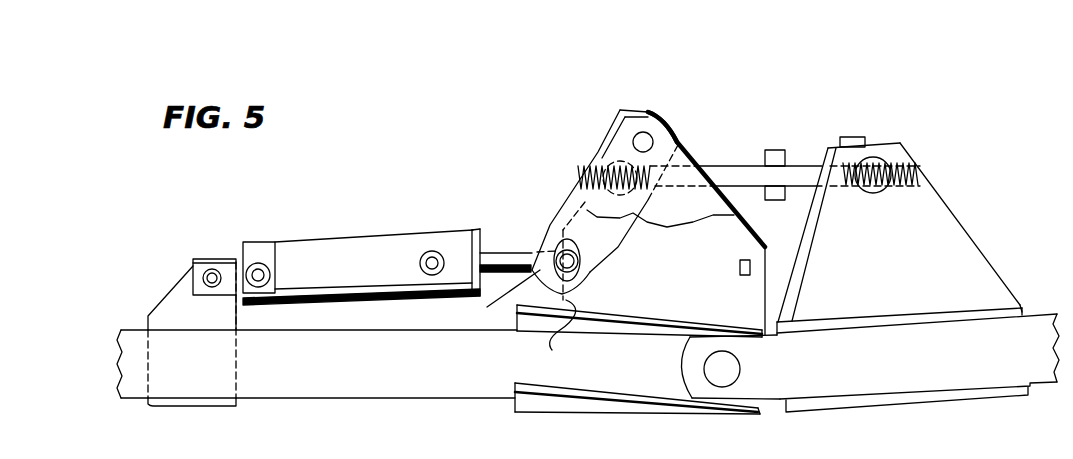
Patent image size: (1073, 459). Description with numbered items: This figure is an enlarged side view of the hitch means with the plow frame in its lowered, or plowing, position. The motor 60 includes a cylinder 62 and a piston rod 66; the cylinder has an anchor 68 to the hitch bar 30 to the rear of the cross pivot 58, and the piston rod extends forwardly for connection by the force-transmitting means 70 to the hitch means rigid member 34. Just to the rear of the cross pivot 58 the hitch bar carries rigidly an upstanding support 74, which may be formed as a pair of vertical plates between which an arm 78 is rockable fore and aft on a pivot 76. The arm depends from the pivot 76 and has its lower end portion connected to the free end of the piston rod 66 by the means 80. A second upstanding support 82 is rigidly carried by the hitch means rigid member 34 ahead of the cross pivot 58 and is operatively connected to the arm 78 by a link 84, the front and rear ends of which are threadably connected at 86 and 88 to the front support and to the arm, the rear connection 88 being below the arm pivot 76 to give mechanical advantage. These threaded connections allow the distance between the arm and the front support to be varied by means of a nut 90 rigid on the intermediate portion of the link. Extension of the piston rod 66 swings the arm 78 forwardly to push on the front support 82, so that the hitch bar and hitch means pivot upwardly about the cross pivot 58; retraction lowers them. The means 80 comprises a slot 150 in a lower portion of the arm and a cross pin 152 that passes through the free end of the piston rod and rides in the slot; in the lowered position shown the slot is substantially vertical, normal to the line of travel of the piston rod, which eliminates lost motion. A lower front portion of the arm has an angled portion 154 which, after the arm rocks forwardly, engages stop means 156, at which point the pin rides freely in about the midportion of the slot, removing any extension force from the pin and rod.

The hitch bar 30 is at (418, 376).
The hitch means rigid member 34 is at (984, 365).
The cross pivot 58 is at (741, 364).
The motor 60 is at (399, 238).
The cylinder 62 is at (305, 252).
The piston rod 66 is at (517, 258).
The anchor 68 is at (208, 270).
The force-transmitting means 70 is at (648, 212).
The upstanding support 74 is at (628, 132).
The pivot 76 is at (645, 140).
The arm 78 is at (615, 246).
The means 80 is at (592, 267).
The second upstanding support 82 is at (942, 238).
The link 84 is at (737, 175).
The threaded connection 86 is at (890, 162).
The rear connection 88 is at (608, 161).
The nut 90 is at (776, 152).
The slot 150 is at (585, 281).
The cross pin 152 is at (493, 299).
The angled portion 154 is at (572, 332).
The stop means 156 is at (756, 277).